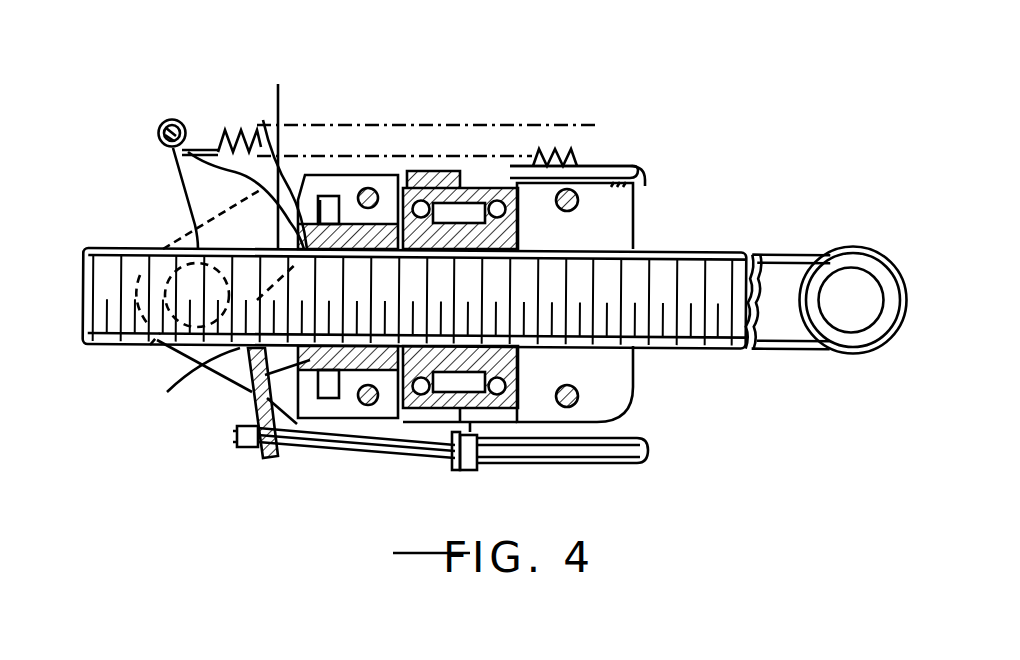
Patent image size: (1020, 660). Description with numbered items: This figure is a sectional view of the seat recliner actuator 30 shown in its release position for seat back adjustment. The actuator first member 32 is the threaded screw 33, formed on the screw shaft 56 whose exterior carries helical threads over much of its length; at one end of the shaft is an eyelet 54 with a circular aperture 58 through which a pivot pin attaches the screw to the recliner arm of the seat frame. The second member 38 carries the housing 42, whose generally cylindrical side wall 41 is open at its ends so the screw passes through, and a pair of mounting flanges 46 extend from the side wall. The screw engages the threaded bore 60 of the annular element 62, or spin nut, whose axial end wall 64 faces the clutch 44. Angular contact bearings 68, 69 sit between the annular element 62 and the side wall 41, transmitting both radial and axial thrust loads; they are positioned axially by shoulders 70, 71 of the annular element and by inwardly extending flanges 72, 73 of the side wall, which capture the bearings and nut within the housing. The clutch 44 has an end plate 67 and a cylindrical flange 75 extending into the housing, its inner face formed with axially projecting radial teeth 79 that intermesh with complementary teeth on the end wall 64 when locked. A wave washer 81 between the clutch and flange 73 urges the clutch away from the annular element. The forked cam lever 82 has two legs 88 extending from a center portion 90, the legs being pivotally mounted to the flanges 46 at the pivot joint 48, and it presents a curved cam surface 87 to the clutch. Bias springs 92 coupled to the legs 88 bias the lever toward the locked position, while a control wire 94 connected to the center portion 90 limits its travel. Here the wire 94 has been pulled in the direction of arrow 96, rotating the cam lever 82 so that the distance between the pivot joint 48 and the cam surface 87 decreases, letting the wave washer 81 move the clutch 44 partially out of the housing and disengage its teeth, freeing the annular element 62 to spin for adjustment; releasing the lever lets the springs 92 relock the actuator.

The actuator 30 is at (514, 91).
The first member 32 is at (736, 253).
The screw 33 is at (662, 252).
The second member 38 is at (312, 172).
The cylindrical side wall 41 is at (382, 414).
The housing 42 is at (430, 186).
The clutch 44 is at (247, 383).
The mounting flanges 46 is at (187, 248).
The pivot joint 48 is at (157, 362).
The eyelet 54 is at (857, 248).
The screw shaft 56 is at (793, 255).
The circular aperture 58 is at (858, 313).
The threaded bore 60 is at (560, 258).
The annular element 62 is at (512, 190).
The axial end wall 64 is at (413, 172).
The end plate 67 is at (428, 149).
The angular contact bearing 68 is at (594, 194).
The angular contact bearing 69 is at (425, 190).
The shoulder 70 is at (517, 227).
The shoulder 71 is at (496, 200).
The inwardly extending flange 72 is at (578, 176).
The inwardly extending flange 73 is at (415, 182).
The cylindrical flange 75 is at (350, 402).
The radial teeth 79 is at (369, 187).
The wave washer 81 is at (297, 395).
The cam lever 82 is at (190, 215).
The cam surface 87 is at (263, 125).
The legs 88 is at (155, 172).
The center portion 90 is at (200, 372).
The bias springs 92 is at (212, 133).
The control wire 94 is at (410, 457).
The arrow 96 is at (218, 457).